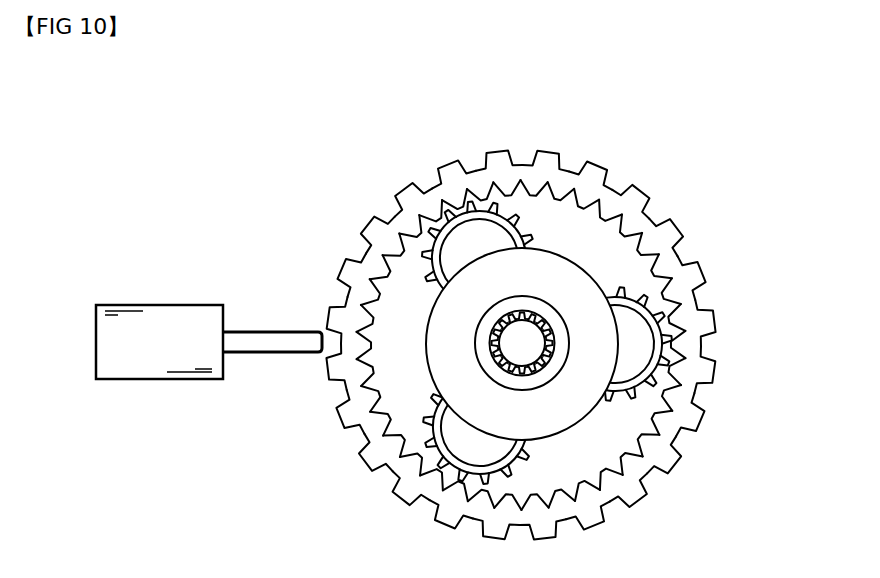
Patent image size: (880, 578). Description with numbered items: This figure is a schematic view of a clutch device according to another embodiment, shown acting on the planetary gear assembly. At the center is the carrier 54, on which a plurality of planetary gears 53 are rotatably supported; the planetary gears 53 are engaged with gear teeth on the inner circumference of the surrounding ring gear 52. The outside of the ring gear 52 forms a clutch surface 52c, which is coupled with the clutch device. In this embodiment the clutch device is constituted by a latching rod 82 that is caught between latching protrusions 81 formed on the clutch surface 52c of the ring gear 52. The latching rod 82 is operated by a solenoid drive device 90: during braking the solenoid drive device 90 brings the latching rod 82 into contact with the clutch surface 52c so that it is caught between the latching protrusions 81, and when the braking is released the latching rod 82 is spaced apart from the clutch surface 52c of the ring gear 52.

The ring gear 52 is at (655, 230).
The clutch surface 52c is at (362, 434).
The planetary gears 53 is at (427, 217).
The carrier 54 is at (605, 338).
The latching protrusions 81 is at (527, 345).
The latching rod 82 is at (283, 343).
The solenoid drive device 90 is at (122, 366).